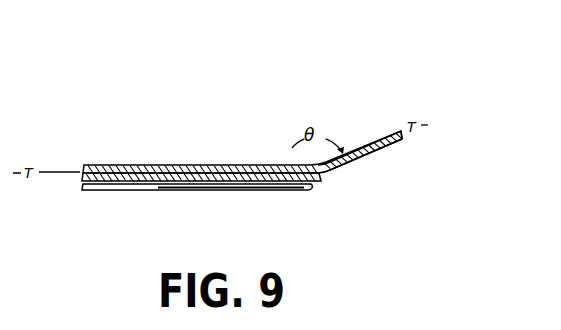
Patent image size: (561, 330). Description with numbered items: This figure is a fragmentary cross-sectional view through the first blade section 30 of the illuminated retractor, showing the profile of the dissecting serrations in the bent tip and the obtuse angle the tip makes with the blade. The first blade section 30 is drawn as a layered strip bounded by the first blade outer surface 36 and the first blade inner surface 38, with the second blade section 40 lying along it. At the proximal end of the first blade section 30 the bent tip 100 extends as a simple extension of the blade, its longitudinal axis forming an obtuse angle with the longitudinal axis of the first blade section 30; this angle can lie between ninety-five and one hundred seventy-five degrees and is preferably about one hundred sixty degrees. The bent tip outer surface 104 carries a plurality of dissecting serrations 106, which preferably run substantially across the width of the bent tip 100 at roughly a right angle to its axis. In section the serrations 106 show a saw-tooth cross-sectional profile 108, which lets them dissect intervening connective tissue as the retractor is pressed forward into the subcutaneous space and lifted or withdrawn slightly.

The first blade section 30 is at (160, 164).
The first blade outer surface 36 is at (235, 164).
The first blade inner surface 38 is at (315, 181).
The second blade section 40 is at (153, 188).
The bent tip 100 is at (394, 147).
The bent tip outer surface 104 is at (397, 130).
The dissecting serrations 106 is at (371, 143).
The saw-tooth cross-sectional profile 108 is at (346, 152).